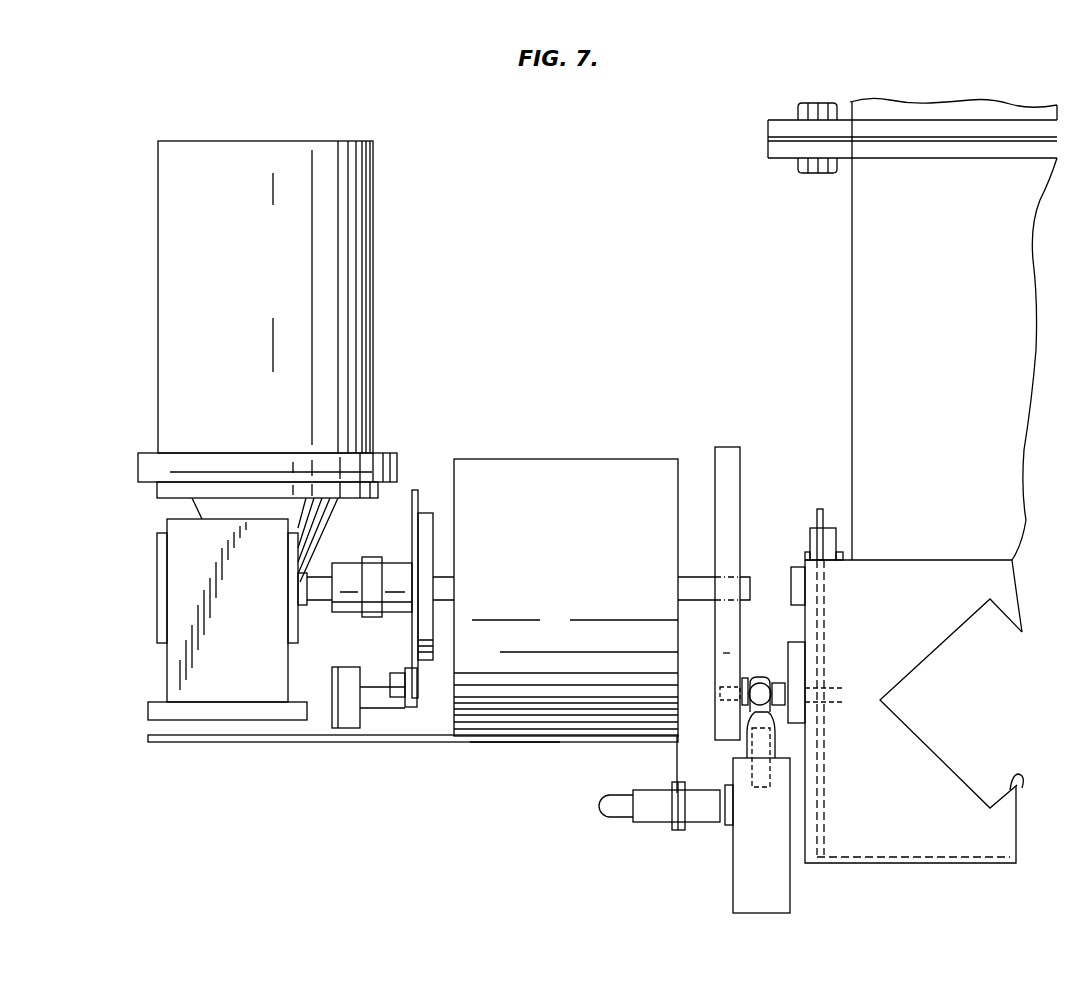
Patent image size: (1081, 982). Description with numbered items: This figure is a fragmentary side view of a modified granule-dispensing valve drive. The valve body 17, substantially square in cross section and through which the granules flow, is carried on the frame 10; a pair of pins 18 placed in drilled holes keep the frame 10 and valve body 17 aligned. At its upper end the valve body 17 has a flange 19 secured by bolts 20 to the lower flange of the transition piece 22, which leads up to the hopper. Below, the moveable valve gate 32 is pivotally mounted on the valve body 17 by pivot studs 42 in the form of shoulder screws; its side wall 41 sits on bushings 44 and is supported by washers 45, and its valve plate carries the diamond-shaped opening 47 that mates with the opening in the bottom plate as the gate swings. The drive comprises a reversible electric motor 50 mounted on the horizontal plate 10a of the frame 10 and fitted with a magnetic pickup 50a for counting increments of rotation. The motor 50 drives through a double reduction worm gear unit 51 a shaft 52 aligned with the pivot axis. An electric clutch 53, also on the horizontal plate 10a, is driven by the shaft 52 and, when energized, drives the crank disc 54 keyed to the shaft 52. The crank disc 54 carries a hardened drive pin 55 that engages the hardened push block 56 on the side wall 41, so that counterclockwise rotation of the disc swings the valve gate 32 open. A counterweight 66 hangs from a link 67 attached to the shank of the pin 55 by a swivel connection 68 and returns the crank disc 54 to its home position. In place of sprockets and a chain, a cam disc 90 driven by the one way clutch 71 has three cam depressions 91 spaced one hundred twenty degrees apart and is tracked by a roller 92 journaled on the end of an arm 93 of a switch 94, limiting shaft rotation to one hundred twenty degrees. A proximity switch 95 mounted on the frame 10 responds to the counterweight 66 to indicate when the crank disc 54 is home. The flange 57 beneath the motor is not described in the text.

The frame 10 is at (230, 750).
The horizontal plate 10a is at (512, 742).
The valve body 17 is at (1002, 366).
The pins 18 is at (776, 148).
The flange 19 is at (770, 124).
The bolts 20 is at (818, 103).
The transition piece 22 is at (1005, 103).
The valve gate 32 is at (1010, 836).
The side wall 41 is at (820, 510).
The pivot studs 42 is at (791, 590).
The bushings 44 is at (807, 552).
The washers 45 is at (836, 540).
The diamond-shaped opening 47 is at (1024, 778).
The reversible electric motor 50 is at (282, 280).
The magnetic pickup 50a is at (266, 462).
The double reduction worm gear unit 51 is at (178, 626).
The shaft 52 is at (320, 592).
The electric clutch 53 is at (568, 588).
The crank disc 54 is at (730, 458).
The drive pin 55 is at (810, 688).
The push block 56 is at (790, 668).
The mounting flange 57 is at (138, 466).
The counterweight 66 is at (772, 885).
The link 67 is at (775, 750).
The swivel connection 68 is at (760, 680).
The one way clutch 71 is at (396, 585).
The cam disc 90 is at (415, 490).
The cam depressions 91 is at (418, 536).
The roller 92 is at (412, 690).
The arm 93 is at (400, 700).
The switch 94 is at (352, 712).
The proximity switch 95 is at (653, 812).